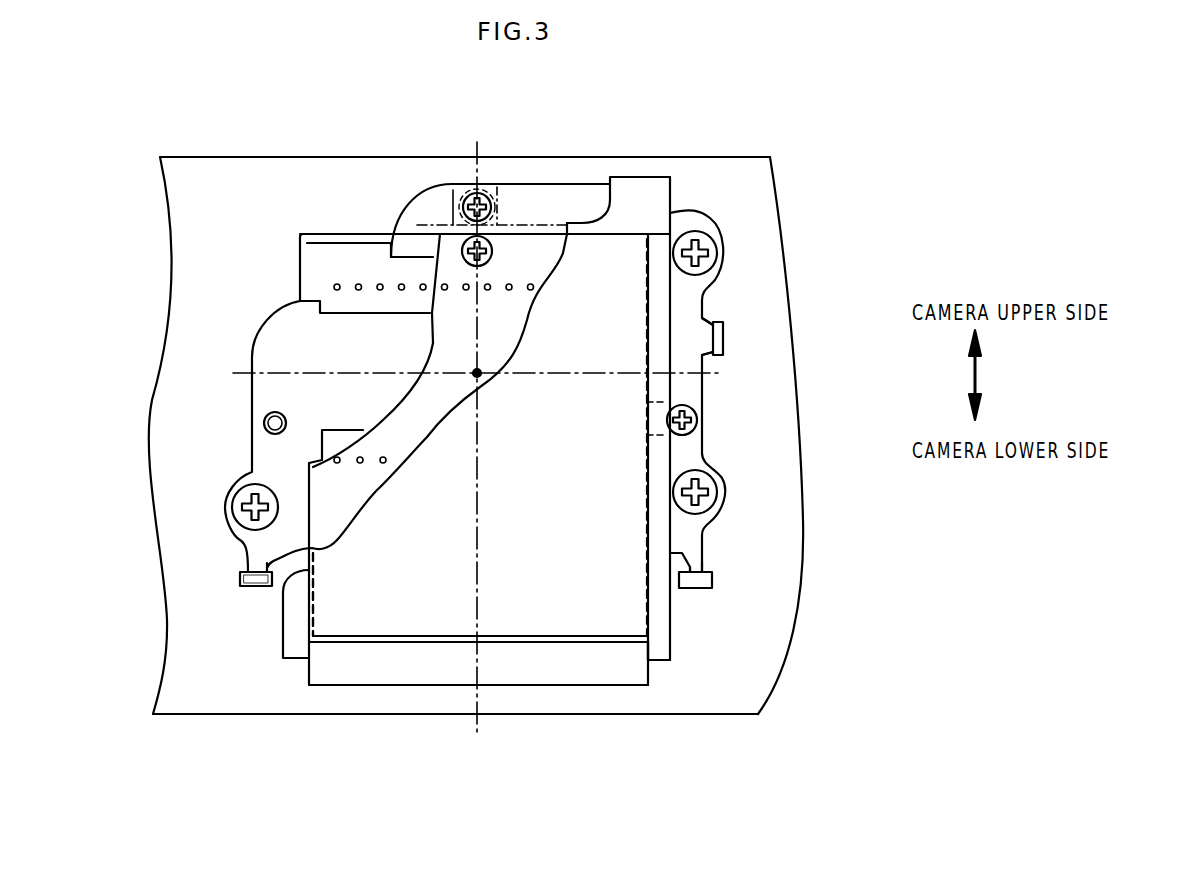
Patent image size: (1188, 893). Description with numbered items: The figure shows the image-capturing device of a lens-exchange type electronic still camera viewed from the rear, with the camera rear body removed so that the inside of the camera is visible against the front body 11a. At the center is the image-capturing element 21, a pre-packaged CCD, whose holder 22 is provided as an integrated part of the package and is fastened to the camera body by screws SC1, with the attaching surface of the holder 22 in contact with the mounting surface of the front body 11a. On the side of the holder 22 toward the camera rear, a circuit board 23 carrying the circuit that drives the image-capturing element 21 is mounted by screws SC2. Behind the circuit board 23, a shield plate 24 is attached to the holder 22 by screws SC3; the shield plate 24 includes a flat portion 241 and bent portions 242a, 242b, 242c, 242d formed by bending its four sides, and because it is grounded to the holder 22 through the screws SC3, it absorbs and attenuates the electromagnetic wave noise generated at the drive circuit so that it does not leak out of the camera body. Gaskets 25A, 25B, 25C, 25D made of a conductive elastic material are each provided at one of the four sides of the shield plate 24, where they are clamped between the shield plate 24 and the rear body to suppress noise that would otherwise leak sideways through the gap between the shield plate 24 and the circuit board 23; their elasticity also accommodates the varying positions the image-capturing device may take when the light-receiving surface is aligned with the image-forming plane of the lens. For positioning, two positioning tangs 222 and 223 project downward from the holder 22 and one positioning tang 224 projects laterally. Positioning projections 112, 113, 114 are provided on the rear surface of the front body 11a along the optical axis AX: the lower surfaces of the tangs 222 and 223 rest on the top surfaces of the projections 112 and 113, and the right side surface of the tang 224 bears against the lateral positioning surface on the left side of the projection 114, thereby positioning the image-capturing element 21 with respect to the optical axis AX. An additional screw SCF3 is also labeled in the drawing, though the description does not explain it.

The front body 11a is at (225, 700).
The image-capturing element 21 is at (330, 258).
The holder 22 is at (452, 195).
The circuit board 23 is at (388, 428).
The shield plate 24 is at (400, 643).
The flat portion 241 is at (570, 558).
The bent portion 242a is at (580, 217).
The bent portion 242b is at (650, 610).
The bent portion 242c is at (543, 644).
The bent portion 242d is at (308, 605).
The gasket 25A is at (652, 203).
The gasket 25B is at (662, 647).
The gasket 25C is at (628, 668).
The gasket 25D is at (288, 645).
The positioning projection 112 is at (247, 582).
The positioning projection 113 is at (712, 580).
The positioning projection 114 is at (723, 342).
The positioning tang 222 is at (248, 556).
The positioning tang 223 is at (703, 562).
The positioning tang 224 is at (718, 307).
The screw SC1 is at (247, 520).
The screw SC2 is at (492, 251).
The screw SC3 is at (486, 198).
The fixing screw SCF3 is at (266, 432).
The optical axis AX is at (477, 373).